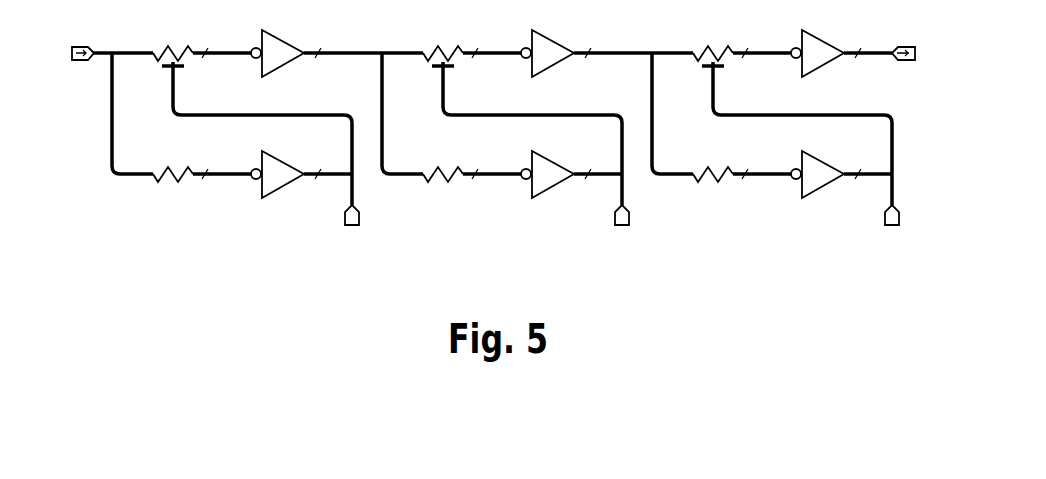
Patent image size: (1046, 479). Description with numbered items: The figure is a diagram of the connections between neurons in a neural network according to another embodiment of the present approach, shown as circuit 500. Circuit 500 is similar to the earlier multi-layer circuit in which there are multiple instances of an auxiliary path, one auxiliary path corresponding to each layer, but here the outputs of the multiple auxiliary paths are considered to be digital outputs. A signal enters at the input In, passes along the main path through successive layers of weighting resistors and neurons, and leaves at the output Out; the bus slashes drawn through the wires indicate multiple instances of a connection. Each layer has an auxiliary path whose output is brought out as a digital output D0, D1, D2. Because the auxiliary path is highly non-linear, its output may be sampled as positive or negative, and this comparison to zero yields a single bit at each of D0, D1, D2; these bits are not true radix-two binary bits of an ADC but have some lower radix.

The circuit 500 is at (763, 244).
The input port In is at (69, 54).
The output port Out is at (922, 54).
The first stage output terminal D0 is at (352, 227).
The second stage output terminal D1 is at (622, 227).
The third stage output terminal D2 is at (892, 227).